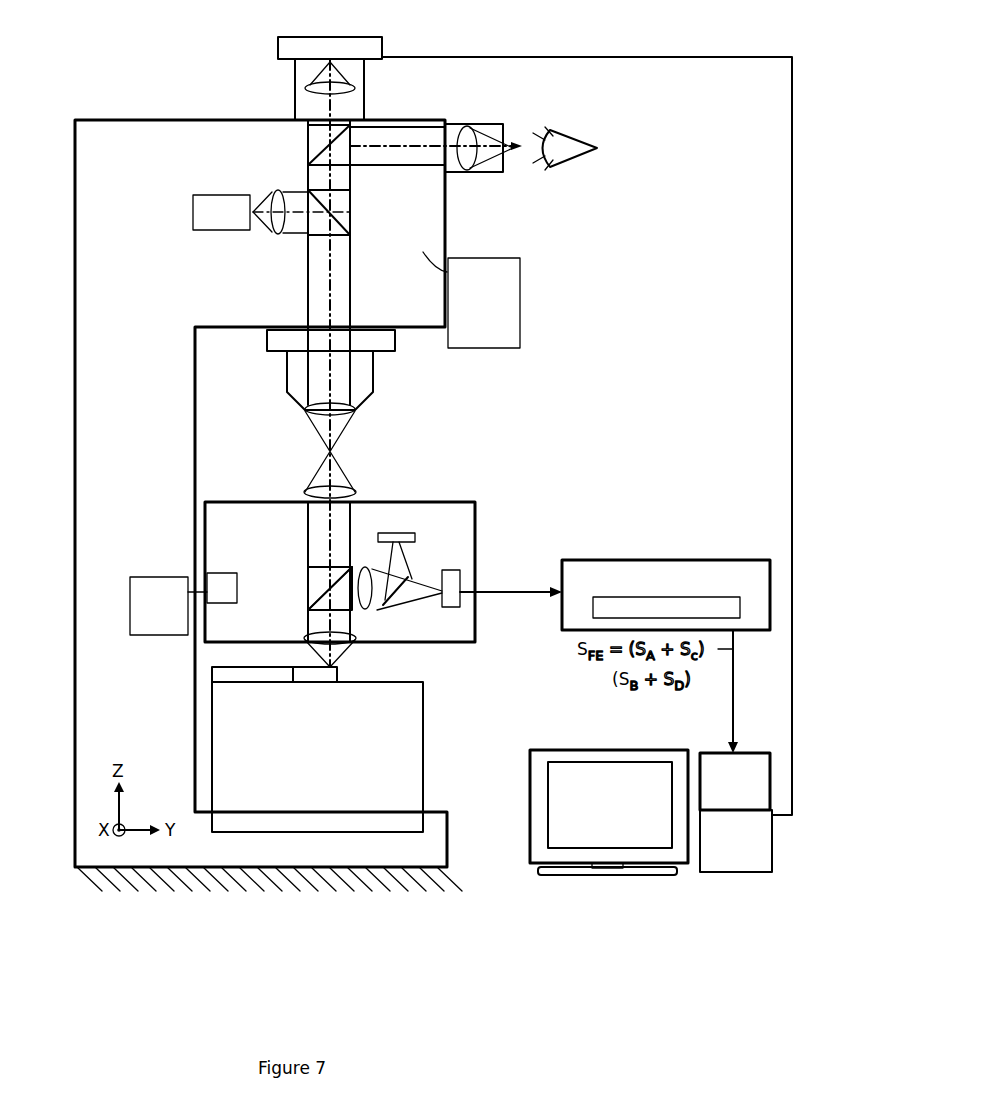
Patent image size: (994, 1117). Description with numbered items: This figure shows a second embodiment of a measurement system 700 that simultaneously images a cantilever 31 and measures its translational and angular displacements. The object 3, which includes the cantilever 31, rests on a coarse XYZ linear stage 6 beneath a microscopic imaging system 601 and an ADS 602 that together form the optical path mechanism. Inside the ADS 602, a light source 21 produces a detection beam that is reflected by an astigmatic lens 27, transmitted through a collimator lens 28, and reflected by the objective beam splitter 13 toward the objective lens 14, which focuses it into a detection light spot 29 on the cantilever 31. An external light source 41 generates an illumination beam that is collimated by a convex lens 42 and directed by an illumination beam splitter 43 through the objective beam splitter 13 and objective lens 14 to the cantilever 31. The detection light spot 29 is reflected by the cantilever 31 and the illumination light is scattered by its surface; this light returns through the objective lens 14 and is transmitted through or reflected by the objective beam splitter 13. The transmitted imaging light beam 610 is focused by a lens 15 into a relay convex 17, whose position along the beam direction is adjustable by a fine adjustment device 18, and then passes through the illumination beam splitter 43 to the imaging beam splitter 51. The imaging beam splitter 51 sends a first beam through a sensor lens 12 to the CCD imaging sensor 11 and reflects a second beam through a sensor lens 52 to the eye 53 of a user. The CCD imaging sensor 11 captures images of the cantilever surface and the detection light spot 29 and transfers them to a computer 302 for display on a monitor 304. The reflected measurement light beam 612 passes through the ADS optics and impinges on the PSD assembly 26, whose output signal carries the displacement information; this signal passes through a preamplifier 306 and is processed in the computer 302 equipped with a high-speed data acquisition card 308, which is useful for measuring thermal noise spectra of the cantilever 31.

The measurement system 700 is at (172, 54).
The CCD imaging sensor 11 is at (287, 52).
The sensor lens 12 is at (316, 92).
The imaging beam splitter 51 is at (308, 141).
The sensor lens 52 is at (485, 175).
The eye 53 is at (565, 160).
The illumination beam splitter 43 is at (340, 210).
The convex lens 42 is at (275, 232).
The external light source 41 is at (220, 218).
The microscopic imaging system 601 is at (123, 199).
The fine adjustment device 18 is at (385, 340).
The relay convex 17 is at (360, 382).
The lens 15 is at (355, 492).
The imaging light beam 610 is at (308, 527).
The measurement light beam 612 is at (352, 567).
The ADS module 602 is at (250, 631).
The objective beam splitter 13 is at (318, 583).
The collimator lens 28 is at (365, 612).
The astigmatic lens 27 is at (398, 607).
The light source 21 is at (413, 535).
The PSD assembly 26 is at (452, 600).
The detection light spot 29 is at (330, 667).
The objective lens 14 is at (344, 643).
The object 3 is at (258, 674).
The cantilever 31 is at (318, 672).
The coarse XYZ linear stage 6 is at (400, 733).
The preamplifier 306 is at (678, 560).
The high-speed data acquisition card 308 is at (713, 767).
The monitor 304 is at (592, 841).
The computer 302 is at (720, 852).